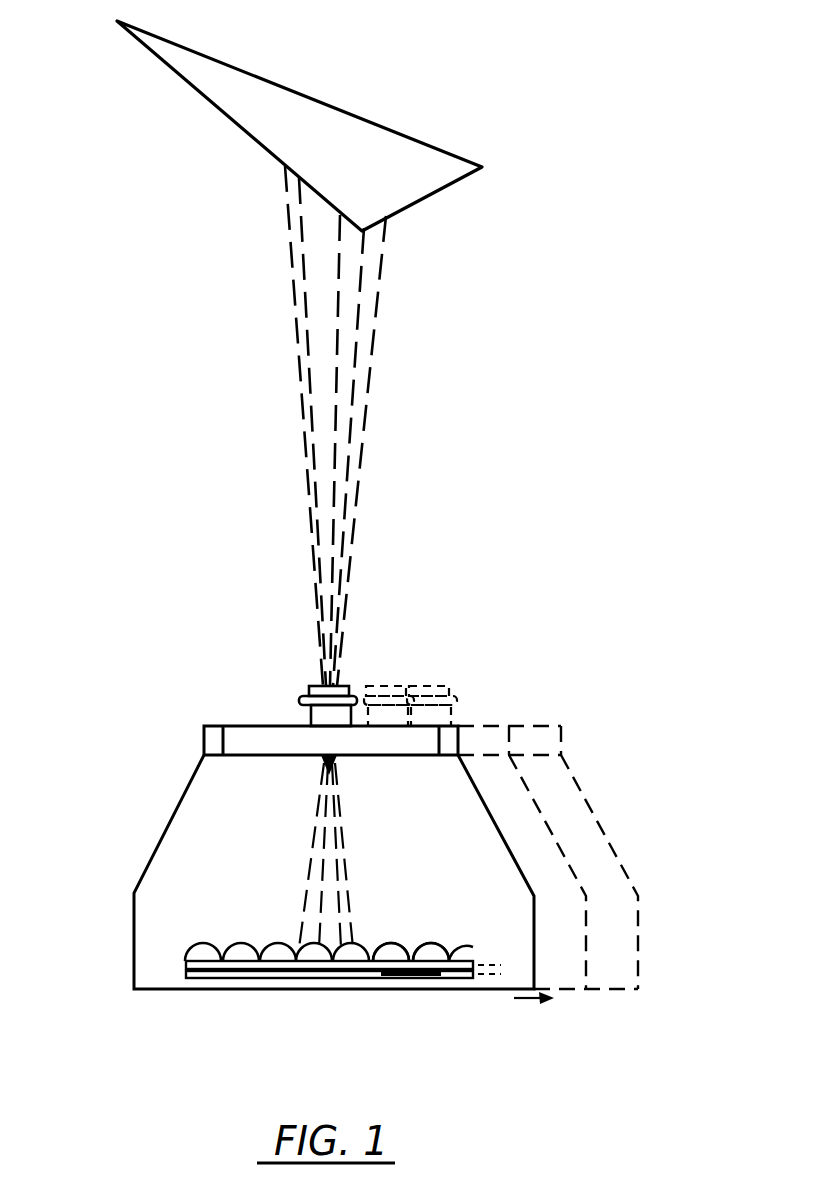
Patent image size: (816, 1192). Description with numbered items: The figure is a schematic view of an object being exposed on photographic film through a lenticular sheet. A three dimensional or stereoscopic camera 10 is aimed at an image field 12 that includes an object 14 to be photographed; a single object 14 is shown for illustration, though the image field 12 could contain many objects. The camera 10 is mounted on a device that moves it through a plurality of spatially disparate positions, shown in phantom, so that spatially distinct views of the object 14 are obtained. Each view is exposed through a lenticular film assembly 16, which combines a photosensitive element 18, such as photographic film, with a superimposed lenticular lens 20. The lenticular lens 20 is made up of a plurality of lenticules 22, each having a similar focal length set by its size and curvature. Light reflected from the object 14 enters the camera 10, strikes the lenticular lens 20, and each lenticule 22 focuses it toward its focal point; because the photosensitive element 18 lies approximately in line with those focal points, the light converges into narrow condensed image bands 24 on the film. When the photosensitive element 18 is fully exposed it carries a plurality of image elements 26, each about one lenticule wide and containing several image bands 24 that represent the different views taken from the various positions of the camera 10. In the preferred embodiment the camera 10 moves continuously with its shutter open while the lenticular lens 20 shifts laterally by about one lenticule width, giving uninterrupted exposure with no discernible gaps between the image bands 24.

The stereoscopic camera 10 is at (110, 814).
The image field 12 is at (145, 244).
The object 14 is at (397, 145).
The lenticular film assembly 16 is at (160, 974).
The photosensitive element 18 is at (250, 978).
The lenticular lens 20 is at (266, 943).
The lenticules 22 is at (403, 940).
The image bands 24 is at (353, 976).
The image elements 26 is at (414, 992).